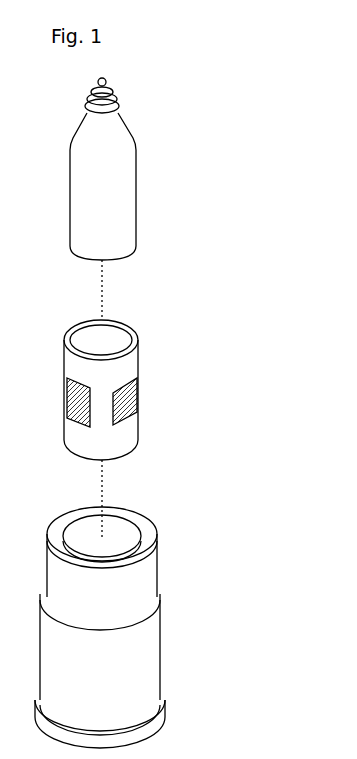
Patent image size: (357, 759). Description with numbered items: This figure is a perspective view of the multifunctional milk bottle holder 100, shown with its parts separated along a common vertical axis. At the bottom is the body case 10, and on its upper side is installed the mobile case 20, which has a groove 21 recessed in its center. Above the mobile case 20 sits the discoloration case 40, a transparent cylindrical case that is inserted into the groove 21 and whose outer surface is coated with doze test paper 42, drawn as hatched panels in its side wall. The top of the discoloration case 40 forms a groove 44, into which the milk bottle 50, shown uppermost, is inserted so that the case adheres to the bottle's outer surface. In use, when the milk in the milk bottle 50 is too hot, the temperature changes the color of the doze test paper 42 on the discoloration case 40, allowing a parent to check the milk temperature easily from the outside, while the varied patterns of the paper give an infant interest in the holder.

The multifunctional milk bottle holder 100 is at (240, 311).
The body case 10 is at (148, 672).
The mobile case 20 is at (138, 580).
The groove 21 is at (124, 533).
The discoloration case 40 is at (128, 366).
The doze test paper 42 is at (142, 400).
The groove 44 is at (126, 336).
The milk bottle 50 is at (113, 198).